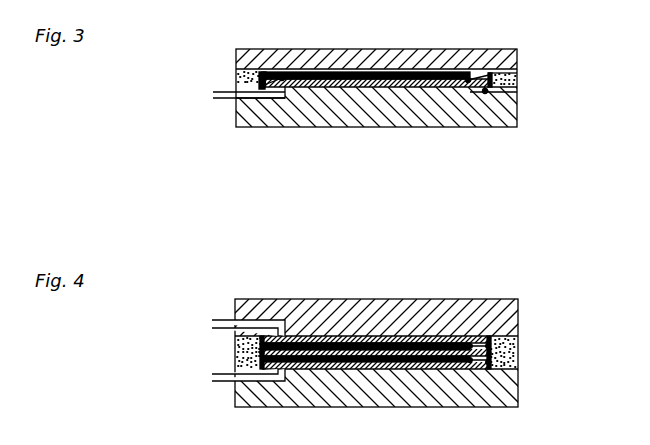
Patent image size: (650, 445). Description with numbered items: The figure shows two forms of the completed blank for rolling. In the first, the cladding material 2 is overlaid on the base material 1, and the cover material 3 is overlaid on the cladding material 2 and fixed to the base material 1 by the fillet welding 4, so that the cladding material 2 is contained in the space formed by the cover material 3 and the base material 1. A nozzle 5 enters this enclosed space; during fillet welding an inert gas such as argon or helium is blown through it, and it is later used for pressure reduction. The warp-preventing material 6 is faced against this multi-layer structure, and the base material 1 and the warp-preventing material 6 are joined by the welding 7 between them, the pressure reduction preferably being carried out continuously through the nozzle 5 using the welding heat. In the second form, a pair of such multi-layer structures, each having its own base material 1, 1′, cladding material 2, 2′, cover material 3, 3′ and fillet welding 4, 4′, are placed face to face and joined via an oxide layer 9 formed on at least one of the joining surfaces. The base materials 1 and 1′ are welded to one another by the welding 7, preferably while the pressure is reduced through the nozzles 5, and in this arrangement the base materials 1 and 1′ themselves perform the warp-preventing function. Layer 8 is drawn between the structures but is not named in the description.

In FIG. 3, the base material 1 is at (518, 113).
In FIG. 4, the base material 1 is at (518, 390).
In FIG. 4, the base material 1′ is at (472, 318).
In FIG. 3, the cladding material 2 is at (343, 82).
In FIG. 4, the cladding material 2 is at (438, 370).
In FIG. 4, the cladding material 2′ is at (428, 345).
In FIG. 3, the cover material 3 is at (385, 76).
In FIG. 4, the cover material 3 is at (385, 372).
In FIG. 4, the cover material 3′ is at (385, 352).
In FIG. 3, the fillet welding 4 is at (247, 72).
In FIG. 4, the fillet welding 4 is at (256, 369).
In FIG. 4, the fillet welding 4′ is at (258, 336).
In FIG. 3, the nozzle 5 is at (213, 96).
In FIG. 4, the nozzle 5 is at (212, 321).
In FIG. 3, the warp-preventing material 6 is at (430, 62).
In FIG. 3, the welding 7 is at (236, 77).
In FIG. 4, the welding 7 is at (235, 350).
In FIG. 3, the electrode layer 8 is at (306, 70).
In FIG. 4, the electrode layer 8 is at (315, 345).
In FIG. 3, the oxide layer 9 is at (445, 72).
In FIG. 4, the oxide layer 9 is at (347, 356).